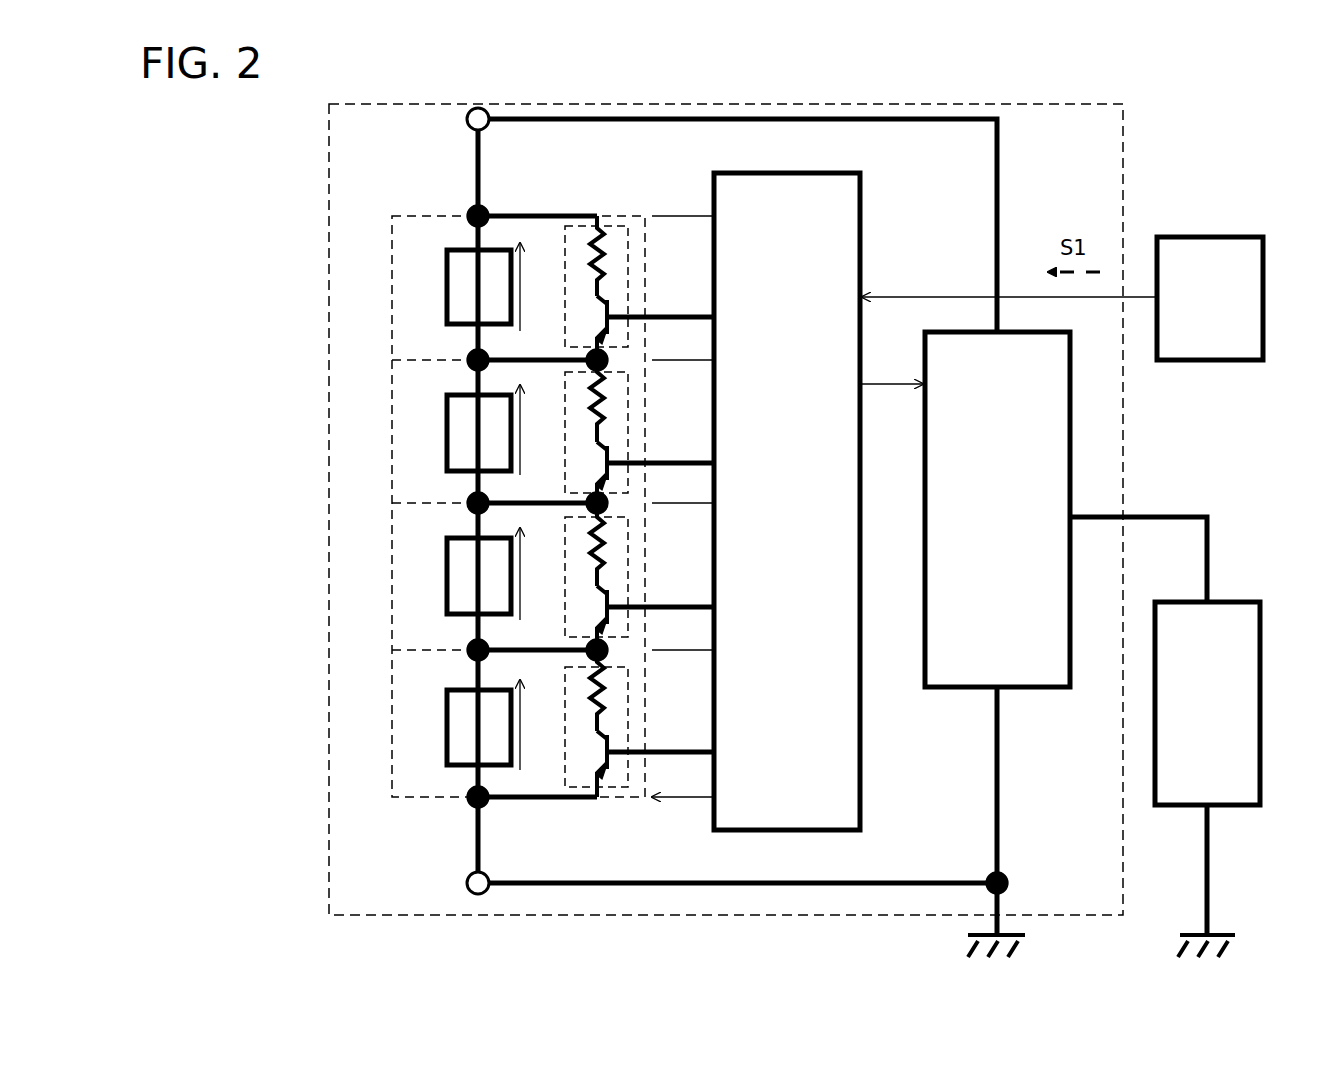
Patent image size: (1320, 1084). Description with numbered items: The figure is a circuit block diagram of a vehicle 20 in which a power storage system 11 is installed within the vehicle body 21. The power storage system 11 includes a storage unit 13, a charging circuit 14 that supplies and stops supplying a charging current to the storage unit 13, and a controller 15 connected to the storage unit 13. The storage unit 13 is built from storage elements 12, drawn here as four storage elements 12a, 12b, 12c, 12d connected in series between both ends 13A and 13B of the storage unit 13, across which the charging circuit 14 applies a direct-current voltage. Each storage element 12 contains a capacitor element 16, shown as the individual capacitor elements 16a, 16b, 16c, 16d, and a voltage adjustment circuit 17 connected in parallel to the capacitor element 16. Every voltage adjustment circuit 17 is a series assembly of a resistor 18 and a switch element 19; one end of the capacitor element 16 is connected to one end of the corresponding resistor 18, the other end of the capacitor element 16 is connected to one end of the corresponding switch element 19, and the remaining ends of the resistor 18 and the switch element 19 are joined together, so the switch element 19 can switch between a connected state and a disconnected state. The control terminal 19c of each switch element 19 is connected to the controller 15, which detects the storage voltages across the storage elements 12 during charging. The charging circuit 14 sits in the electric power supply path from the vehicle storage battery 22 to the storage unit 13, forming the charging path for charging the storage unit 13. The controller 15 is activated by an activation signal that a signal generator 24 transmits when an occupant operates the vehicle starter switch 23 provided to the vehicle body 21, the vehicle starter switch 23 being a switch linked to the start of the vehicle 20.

The power storage system 11 is at (1130, 153).
The storage element 12 is at (533, 482).
The storage element 12a is at (391, 311).
The storage element 12b is at (391, 392).
The storage element 12c is at (391, 603).
The storage element 12d is at (391, 682).
The storage unit 13 is at (230, 760).
The end of storage unit 13A is at (466, 129).
The end of storage unit 13B is at (466, 875).
The charging circuit 14 is at (1025, 688).
The controller 15 is at (860, 248).
The capacitor element 16 is at (448, 523).
The capacitor element 16a is at (447, 280).
The capacitor element 16b is at (450, 413).
The capacitor element 16c is at (447, 575).
The capacitor element 16d is at (450, 728).
The voltage adjustment circuit 17 is at (616, 222).
The resistor 18 is at (603, 250).
The switch element 19 is at (609, 294).
The control terminal 19c is at (675, 320).
The vehicle 20 is at (426, 479).
The vehicle body 21 is at (518, 506).
The vehicle storage battery 22 is at (1175, 806).
The vehicle starter switch 23 is at (1062, 343).
The signal generator 24 is at (1185, 362).